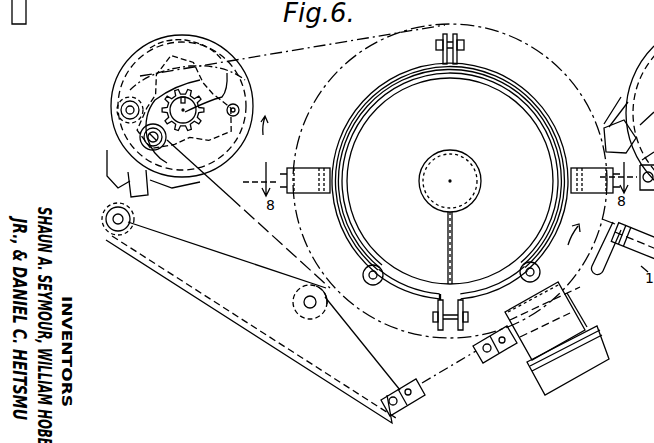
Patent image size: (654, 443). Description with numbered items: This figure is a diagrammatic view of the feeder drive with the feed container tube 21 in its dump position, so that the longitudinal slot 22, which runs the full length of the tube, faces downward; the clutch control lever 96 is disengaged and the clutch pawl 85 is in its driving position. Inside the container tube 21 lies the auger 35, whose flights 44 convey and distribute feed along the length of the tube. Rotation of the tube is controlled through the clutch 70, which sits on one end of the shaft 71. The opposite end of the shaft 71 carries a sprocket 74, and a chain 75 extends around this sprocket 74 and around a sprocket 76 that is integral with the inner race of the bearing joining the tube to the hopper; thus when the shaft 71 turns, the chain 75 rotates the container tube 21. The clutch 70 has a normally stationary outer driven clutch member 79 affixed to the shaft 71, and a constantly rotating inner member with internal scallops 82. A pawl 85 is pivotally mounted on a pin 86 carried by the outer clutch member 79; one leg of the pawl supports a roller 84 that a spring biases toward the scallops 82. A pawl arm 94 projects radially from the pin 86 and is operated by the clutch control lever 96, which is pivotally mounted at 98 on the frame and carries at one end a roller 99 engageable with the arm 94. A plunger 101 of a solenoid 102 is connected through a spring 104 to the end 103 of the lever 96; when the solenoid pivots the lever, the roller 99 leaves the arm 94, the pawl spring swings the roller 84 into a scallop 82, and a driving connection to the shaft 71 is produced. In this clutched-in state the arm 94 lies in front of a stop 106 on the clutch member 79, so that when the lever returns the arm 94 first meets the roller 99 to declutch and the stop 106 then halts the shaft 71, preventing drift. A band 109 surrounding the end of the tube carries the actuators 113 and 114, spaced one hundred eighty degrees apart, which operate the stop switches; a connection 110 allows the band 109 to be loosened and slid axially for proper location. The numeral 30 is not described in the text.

The housing 30 is at (26, 6).
The clutch 70 is at (80, 87).
The shaft 71 is at (200, 98).
The sprocket 74 is at (146, 82).
The chain 75 is at (284, 54).
The sprocket 76 is at (513, 23).
The outer driven clutch member 79 is at (204, 46).
The internal scallops 82 is at (166, 42).
The roller 84 is at (121, 110).
The pawl 85 is at (140, 137).
The pin 86 is at (653, 100).
The pawl arm 94 is at (145, 195).
The clutch control lever 96 is at (267, 325).
The pivot 98 is at (302, 302).
The roller 99 is at (105, 219).
The plunger 101 is at (488, 366).
The solenoid 102 is at (578, 333).
The end of control lever 103 is at (372, 398).
The spring 104 is at (445, 388).
The stop 106 is at (110, 160).
The band 109 is at (522, 80).
The connection 110 is at (442, 328).
The actuator 113 is at (306, 176).
The actuator 114 is at (598, 176).
The feed container tube 21 is at (380, 94).
The longitudinal slot 22 is at (478, 288).
The auger 35 is at (462, 119).
The flights 44 is at (447, 230).